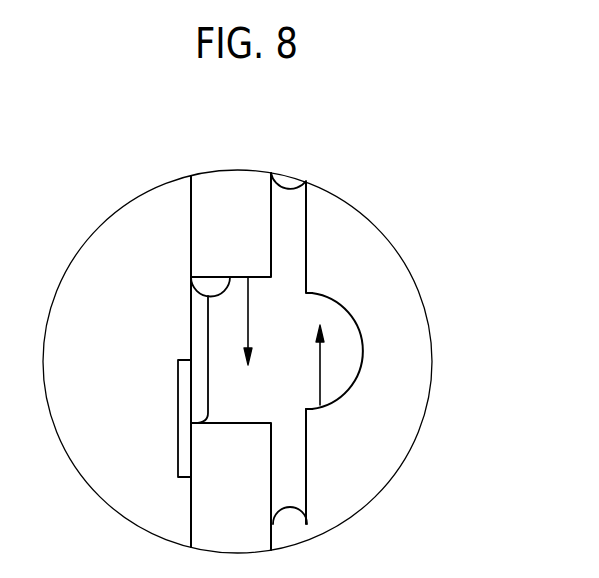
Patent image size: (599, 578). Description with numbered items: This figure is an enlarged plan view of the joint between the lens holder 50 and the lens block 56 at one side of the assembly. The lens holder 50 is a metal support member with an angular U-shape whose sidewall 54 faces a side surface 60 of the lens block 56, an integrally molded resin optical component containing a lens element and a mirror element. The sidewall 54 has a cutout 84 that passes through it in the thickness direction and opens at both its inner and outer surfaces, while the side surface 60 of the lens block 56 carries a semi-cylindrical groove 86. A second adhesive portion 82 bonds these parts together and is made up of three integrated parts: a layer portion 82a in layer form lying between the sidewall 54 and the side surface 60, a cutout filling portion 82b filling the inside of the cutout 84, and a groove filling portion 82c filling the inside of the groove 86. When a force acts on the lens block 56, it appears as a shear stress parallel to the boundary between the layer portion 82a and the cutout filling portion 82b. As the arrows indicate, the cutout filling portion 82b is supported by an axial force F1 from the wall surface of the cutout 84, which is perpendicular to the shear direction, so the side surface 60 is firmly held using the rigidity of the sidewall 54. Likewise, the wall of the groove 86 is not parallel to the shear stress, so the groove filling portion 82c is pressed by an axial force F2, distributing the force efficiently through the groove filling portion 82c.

The lens holder 50 is at (222, 185).
The sidewall 54 is at (207, 217).
The lens block 56 is at (385, 282).
The side surface 60 is at (306, 448).
The second adhesive portion 82 is at (213, 400).
The layer portion 82a is at (290, 238).
The cutout filling portion 82b is at (223, 353).
The groove filling portion 82c is at (345, 322).
The cutout 84 is at (217, 300).
The groove 86 is at (347, 390).
The axial force F1 is at (248, 320).
The axial force F2 is at (320, 355).